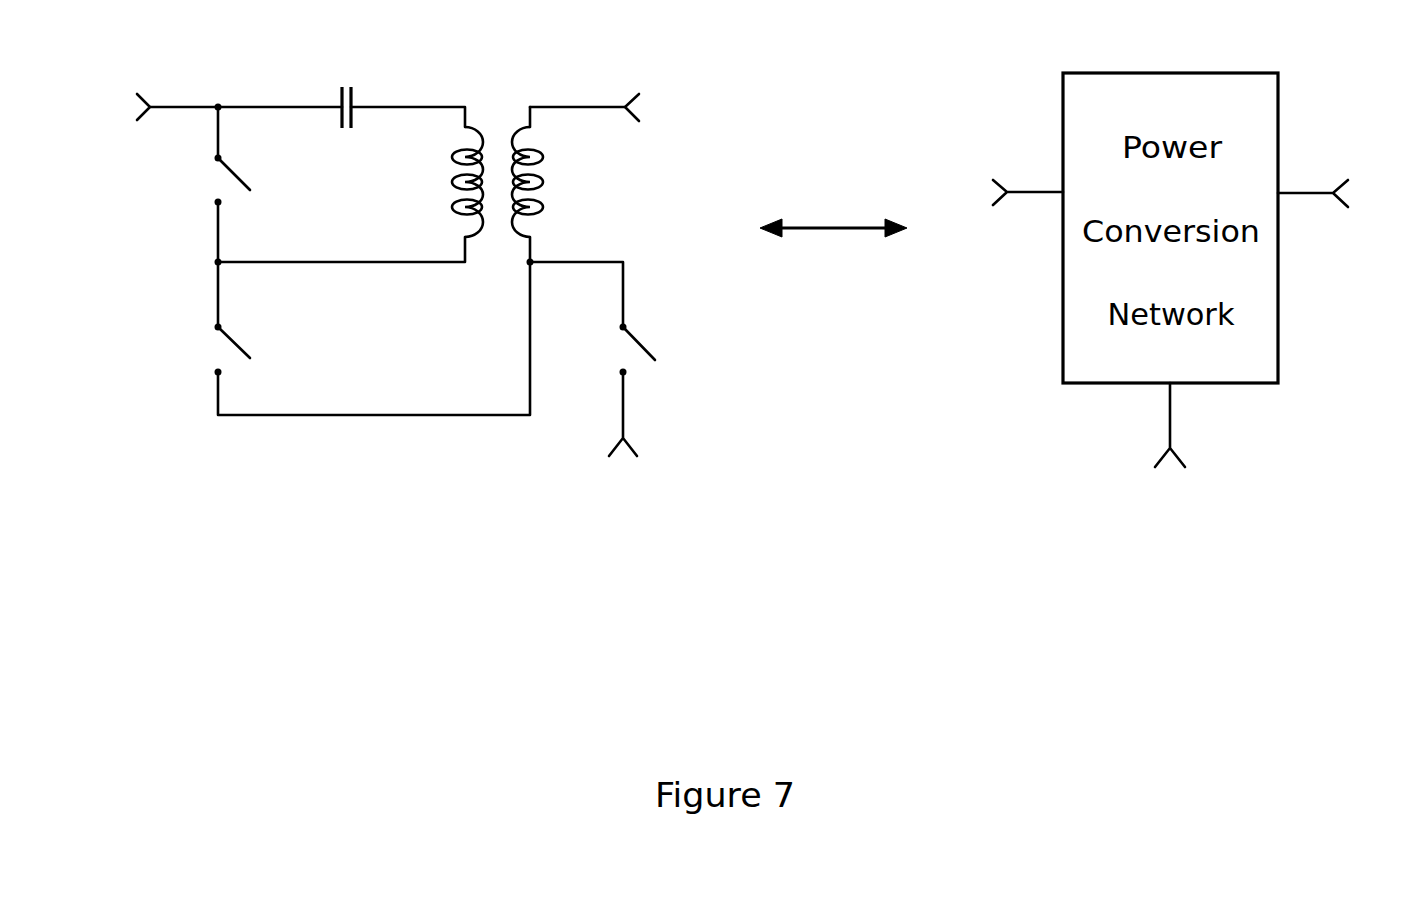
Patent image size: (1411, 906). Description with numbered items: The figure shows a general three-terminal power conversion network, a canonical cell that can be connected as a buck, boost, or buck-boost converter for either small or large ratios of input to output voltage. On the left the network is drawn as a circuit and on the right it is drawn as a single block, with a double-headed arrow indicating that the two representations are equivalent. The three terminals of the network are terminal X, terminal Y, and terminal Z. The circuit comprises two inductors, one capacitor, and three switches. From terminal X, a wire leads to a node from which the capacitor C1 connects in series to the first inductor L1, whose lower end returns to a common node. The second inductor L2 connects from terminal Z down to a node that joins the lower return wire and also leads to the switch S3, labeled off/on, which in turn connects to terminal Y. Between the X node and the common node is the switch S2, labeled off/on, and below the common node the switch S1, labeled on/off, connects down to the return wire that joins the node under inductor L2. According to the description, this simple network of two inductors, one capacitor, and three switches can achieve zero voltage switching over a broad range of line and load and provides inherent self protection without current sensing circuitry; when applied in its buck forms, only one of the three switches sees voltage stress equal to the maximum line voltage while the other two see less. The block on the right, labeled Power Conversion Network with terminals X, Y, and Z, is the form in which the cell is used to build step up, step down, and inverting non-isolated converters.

The switch S1 is at (155, 317).
The switch S2 is at (153, 155).
The switch S3 is at (662, 321).
The capacitor C1 is at (343, 85).
The inductor L1 is at (447, 182).
The inductor L2 is at (549, 182).
The terminal X is at (584, 151).
The terminal Y is at (897, 442).
The terminal Z is at (1006, 151).